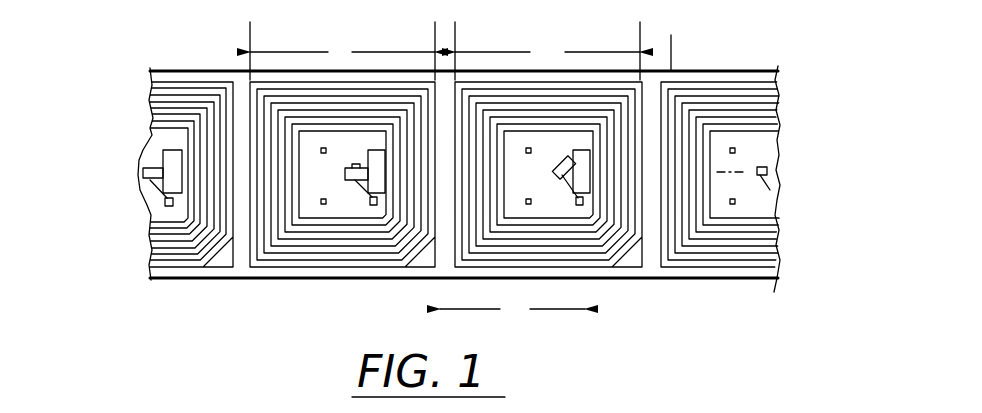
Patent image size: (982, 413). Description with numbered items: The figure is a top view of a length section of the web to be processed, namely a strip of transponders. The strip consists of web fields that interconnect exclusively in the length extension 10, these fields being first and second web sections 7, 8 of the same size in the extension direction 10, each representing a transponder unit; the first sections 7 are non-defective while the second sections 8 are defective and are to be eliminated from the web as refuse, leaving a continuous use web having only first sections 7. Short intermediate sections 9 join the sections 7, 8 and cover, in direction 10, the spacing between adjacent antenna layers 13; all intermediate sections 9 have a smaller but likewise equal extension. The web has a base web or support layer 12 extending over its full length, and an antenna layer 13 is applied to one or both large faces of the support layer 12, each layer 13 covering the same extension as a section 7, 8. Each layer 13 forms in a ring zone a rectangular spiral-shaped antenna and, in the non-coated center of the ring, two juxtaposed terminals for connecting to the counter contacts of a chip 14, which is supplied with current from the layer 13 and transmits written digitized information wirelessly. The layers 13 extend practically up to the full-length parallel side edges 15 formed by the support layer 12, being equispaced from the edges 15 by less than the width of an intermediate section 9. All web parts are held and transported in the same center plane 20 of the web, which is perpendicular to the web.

The first web section 7 is at (752, 16).
The second web section 8 is at (547, 51).
The intermediate section 9 is at (443, 14).
The length extension 10 is at (512, 322).
The support layer 12 is at (772, 203).
The antenna layer 13 is at (322, 250).
The chip 14 is at (145, 171).
The side edge 15 is at (671, 35).
The center plane 20 is at (740, 168).